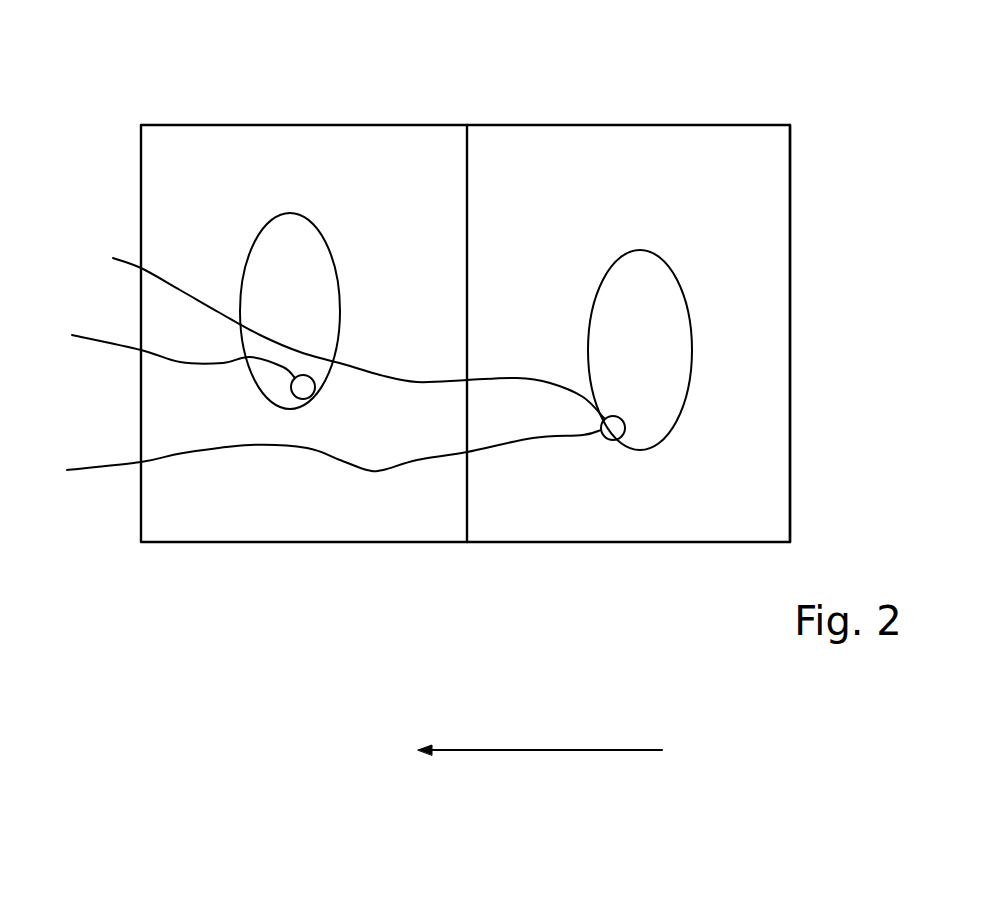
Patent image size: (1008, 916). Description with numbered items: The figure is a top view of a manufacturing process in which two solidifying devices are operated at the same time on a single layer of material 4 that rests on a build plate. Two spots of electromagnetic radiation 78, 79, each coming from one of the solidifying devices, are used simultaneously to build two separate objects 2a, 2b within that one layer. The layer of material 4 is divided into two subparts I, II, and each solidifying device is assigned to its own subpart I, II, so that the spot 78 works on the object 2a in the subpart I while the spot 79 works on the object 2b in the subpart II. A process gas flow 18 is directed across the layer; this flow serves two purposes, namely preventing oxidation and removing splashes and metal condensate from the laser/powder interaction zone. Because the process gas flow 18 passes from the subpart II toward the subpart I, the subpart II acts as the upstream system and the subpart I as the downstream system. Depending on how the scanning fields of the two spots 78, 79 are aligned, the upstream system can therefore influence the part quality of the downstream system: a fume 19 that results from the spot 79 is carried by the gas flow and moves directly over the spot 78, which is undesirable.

The object 2a is at (287, 255).
The object 2b is at (628, 278).
The subpart I is at (358, 185).
The subpart II is at (727, 220).
The layer of material 4 is at (185, 518).
The process gas flow 18 is at (530, 750).
The fume 19 is at (310, 442).
The spot of electromagnetic radiation 78 is at (314, 365).
The spot of electromagnetic radiation 79 is at (613, 440).